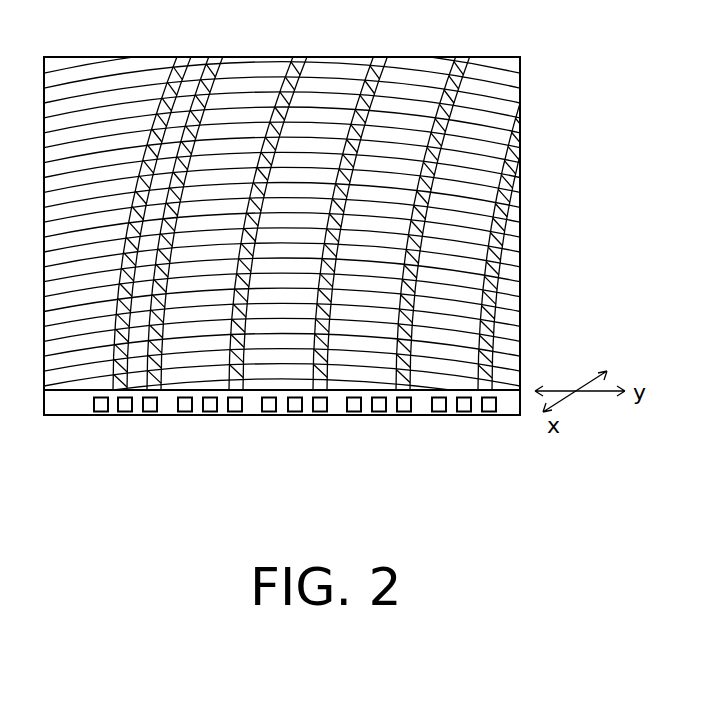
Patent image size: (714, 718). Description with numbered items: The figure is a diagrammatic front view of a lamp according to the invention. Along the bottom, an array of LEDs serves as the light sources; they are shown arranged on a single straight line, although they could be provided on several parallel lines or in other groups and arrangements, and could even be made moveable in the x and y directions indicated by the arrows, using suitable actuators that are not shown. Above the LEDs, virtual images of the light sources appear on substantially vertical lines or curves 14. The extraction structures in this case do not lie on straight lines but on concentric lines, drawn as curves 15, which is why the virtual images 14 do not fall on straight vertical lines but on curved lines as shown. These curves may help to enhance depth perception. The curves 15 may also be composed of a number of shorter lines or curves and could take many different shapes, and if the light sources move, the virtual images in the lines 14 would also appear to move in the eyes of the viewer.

The virtual images lines 14 is at (163, 102).
The curves of extraction structures 15 is at (519, 94).